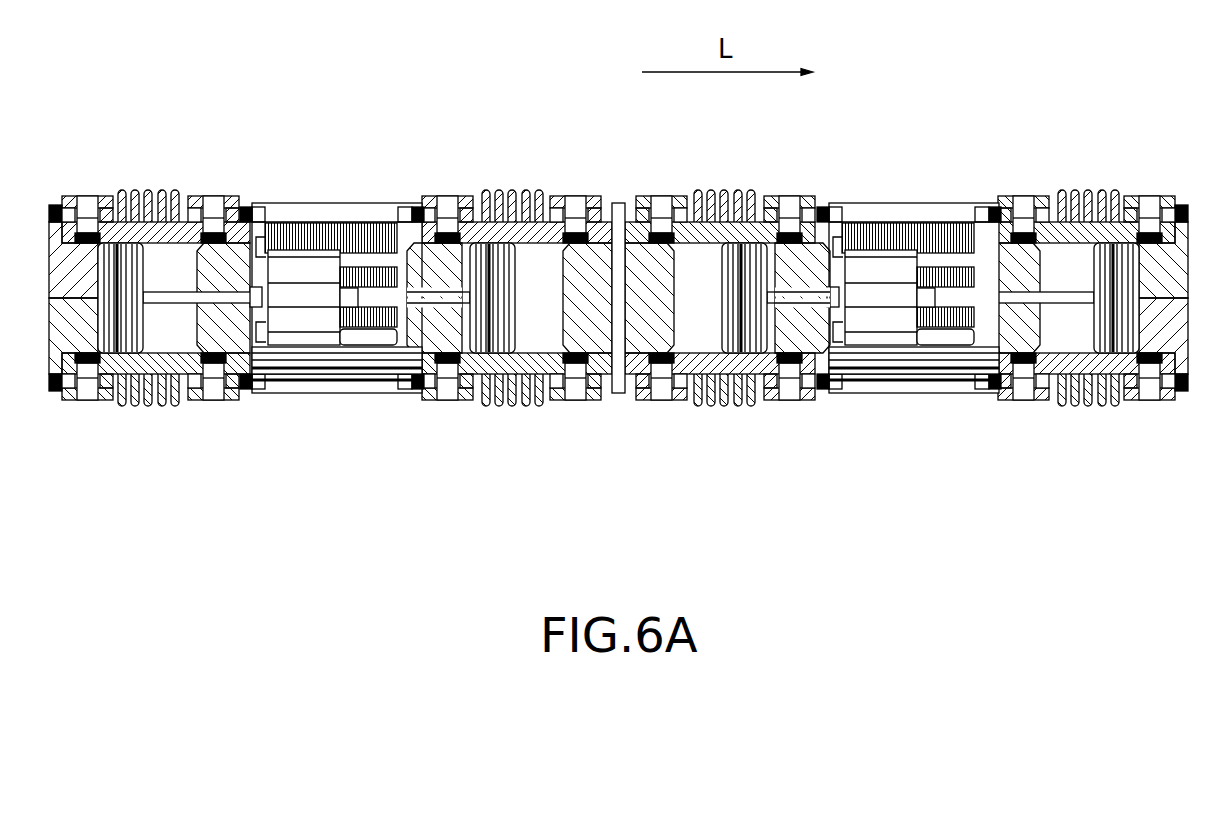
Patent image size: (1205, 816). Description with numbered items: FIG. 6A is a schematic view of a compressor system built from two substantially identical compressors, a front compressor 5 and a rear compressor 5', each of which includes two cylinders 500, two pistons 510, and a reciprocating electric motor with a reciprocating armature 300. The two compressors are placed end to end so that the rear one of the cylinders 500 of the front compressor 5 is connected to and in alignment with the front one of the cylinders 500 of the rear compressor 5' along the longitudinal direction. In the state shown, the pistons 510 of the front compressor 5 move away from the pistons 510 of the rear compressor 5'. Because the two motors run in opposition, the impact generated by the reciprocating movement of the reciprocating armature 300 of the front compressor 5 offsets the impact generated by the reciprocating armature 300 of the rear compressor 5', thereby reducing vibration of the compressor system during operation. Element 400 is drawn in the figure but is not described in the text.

The front compressor 5 is at (330, 219).
The rear compressor 5' is at (906, 242).
The reciprocating armature 300 is at (438, 272).
The circuit board 400 is at (330, 418).
The cylinders 500 is at (145, 432).
The pistons 510 is at (118, 262).